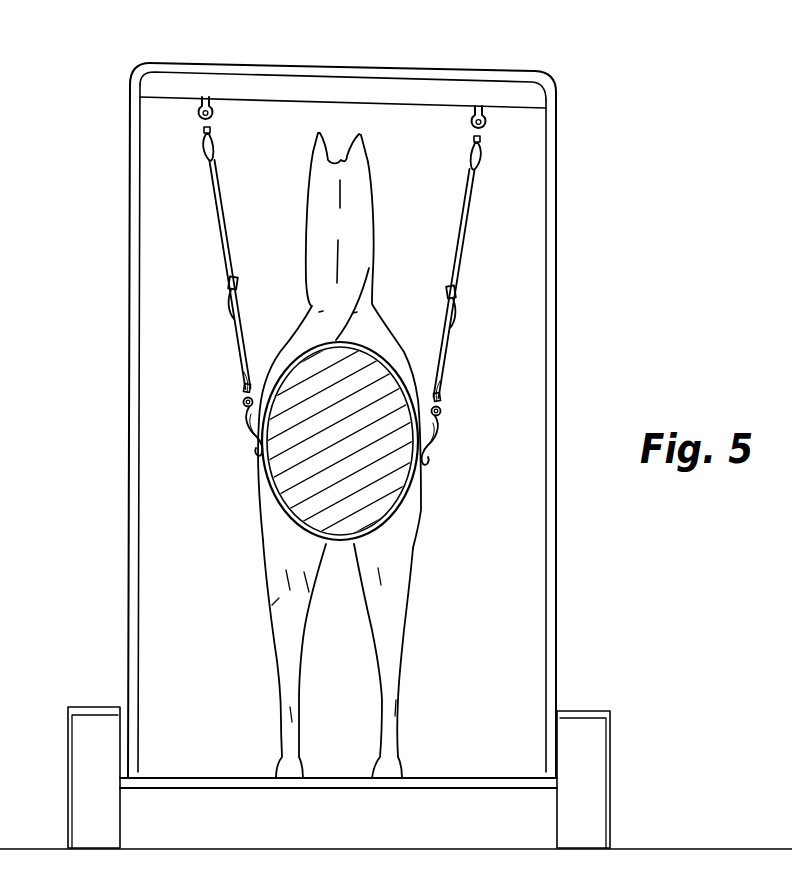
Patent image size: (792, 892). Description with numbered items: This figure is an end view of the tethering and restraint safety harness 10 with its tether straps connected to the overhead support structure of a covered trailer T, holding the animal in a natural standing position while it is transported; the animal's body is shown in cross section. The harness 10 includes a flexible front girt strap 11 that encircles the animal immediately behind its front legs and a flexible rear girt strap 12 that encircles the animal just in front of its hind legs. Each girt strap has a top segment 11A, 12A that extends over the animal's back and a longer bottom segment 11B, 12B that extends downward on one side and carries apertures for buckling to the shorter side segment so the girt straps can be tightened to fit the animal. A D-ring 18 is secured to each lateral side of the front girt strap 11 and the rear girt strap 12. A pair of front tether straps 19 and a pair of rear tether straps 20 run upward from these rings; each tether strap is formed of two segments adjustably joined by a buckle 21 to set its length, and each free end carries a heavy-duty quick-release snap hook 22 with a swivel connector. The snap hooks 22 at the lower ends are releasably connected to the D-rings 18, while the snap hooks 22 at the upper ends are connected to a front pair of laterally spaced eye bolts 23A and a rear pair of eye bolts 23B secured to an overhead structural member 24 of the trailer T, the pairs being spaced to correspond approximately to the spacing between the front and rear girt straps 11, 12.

The tethering and restraint safety harness 10 is at (452, 478).
The front girt strap 11 is at (322, 452).
The rear girt strap 12 is at (350, 336).
The top segment of front girt strap 11A is at (361, 299).
The top segment of rear girt strap 12A is at (350, 276).
The longer bottom segment of front girt strap 11B is at (292, 546).
The longer bottom segment of rear girt strap 12B is at (285, 520).
The D-ring 18 is at (250, 421).
The front tether strap 19 is at (343, 280).
The rear tether strap 20 is at (229, 243).
The buckle 21 is at (229, 288).
The quick-release snap hook 22 is at (217, 133).
The front eye bolt 23A is at (353, 118).
The rear eye bolt 23B is at (201, 115).
The overhead structural member 24 is at (320, 85).
The covered trailer T is at (396, 440).